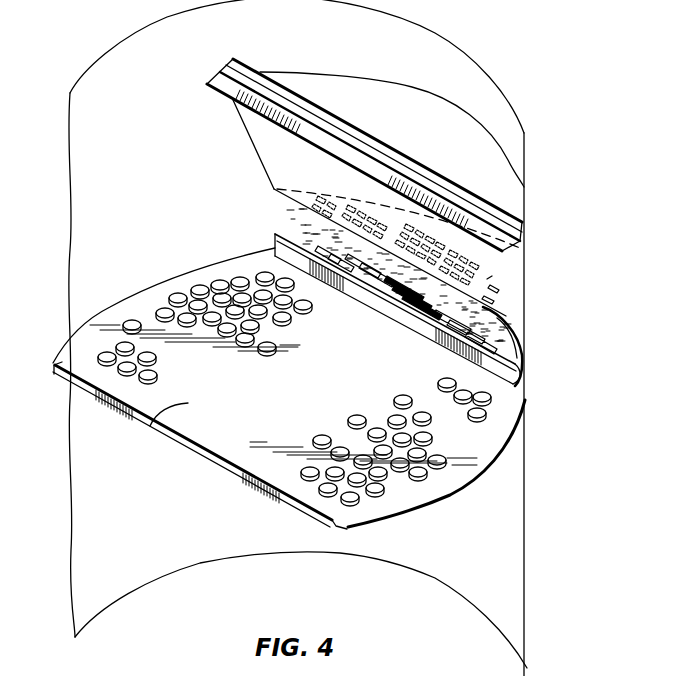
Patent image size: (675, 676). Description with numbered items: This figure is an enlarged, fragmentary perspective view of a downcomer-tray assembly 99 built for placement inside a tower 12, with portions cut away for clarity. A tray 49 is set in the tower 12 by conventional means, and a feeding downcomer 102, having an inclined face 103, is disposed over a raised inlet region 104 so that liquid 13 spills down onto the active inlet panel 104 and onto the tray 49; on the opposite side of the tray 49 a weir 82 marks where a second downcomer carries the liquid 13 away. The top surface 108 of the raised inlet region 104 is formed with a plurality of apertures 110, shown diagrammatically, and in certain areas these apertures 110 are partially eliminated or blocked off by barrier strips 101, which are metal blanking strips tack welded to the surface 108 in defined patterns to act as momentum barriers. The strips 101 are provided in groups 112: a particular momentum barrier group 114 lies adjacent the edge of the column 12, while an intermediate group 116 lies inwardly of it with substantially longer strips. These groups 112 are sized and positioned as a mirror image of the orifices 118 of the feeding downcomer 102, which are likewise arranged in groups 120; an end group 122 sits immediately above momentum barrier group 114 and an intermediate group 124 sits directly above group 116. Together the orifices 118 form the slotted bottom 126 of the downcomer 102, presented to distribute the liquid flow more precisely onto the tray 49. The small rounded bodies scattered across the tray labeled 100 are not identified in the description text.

The tower 12 is at (528, 538).
The liquid 13 is at (482, 164).
The tray 49 is at (402, 505).
The weir 82 is at (220, 457).
The downcomer-tray assembly 99 is at (138, 197).
The particles 100 is at (221, 281).
The barrier strips 101 is at (380, 303).
The feeding downcomer 102 is at (253, 137).
The inclined face 103 is at (268, 162).
The raised inlet region 104 is at (515, 355).
The top surface 108 is at (505, 324).
The apertures 110 is at (315, 240).
The groups 112 is at (333, 281).
The momentum barrier group 114 is at (515, 315).
The intermediate group 116 is at (500, 305).
The orifices 118 is at (496, 291).
The groups 120 is at (370, 201).
The end group 122 is at (489, 283).
The intermediate group 124 is at (477, 240).
The bottom 126 is at (353, 196).